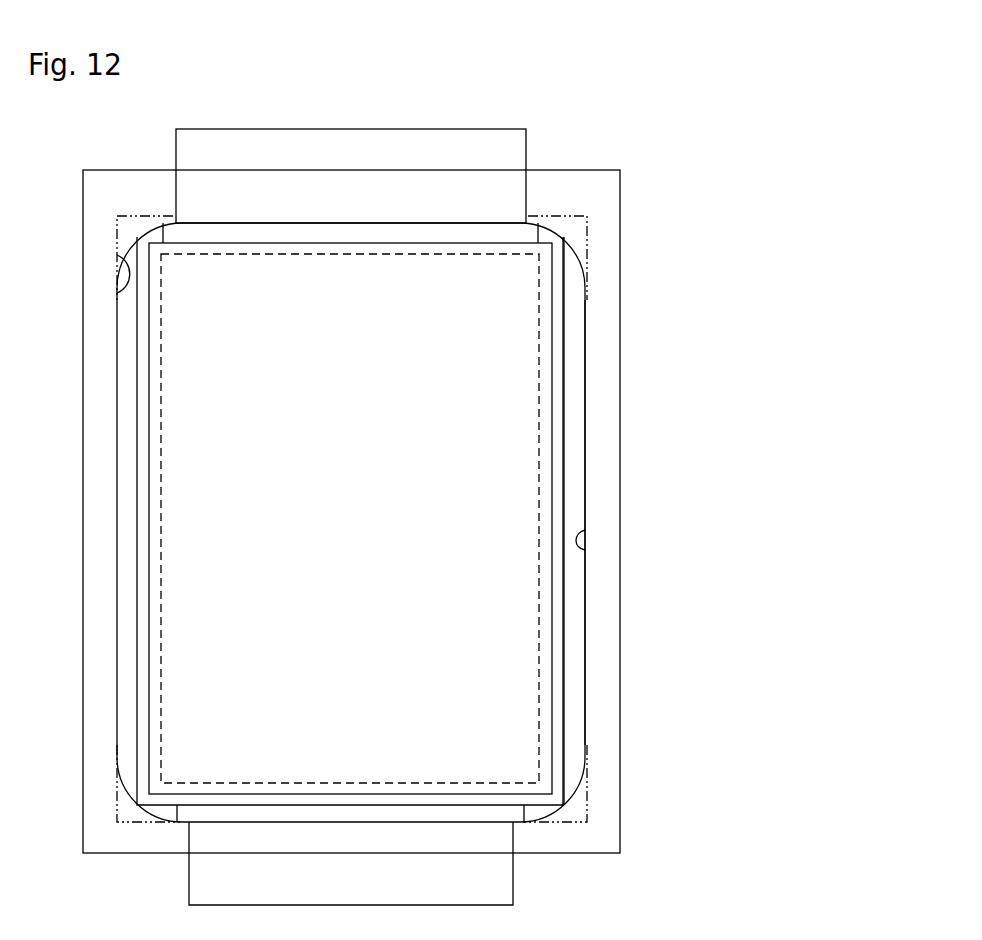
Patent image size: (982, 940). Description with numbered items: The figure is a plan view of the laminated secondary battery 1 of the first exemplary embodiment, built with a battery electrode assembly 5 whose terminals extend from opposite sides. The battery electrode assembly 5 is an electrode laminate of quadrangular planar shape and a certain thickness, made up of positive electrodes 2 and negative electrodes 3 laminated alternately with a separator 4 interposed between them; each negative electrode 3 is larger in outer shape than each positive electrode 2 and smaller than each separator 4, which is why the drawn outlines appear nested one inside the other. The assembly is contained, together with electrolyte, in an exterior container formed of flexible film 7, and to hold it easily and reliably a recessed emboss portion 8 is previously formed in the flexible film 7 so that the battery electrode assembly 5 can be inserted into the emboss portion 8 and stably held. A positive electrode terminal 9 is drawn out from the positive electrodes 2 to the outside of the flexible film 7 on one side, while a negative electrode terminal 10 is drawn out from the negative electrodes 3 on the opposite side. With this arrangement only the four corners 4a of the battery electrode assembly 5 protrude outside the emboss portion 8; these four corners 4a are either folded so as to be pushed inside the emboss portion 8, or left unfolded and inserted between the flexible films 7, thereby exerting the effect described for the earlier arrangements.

The secondary battery 1 is at (596, 80).
The positive electrode 2 is at (540, 328).
The negative electrode 3 is at (553, 372).
The separator 4 is at (564, 423).
The corner 4a is at (137, 236).
The battery electrode assembly 5 is at (569, 495).
The flexible film 7 is at (605, 647).
The emboss portion 8 is at (117, 293).
The positive electrode terminal 9 is at (485, 876).
The negative electrode terminal 10 is at (520, 142).